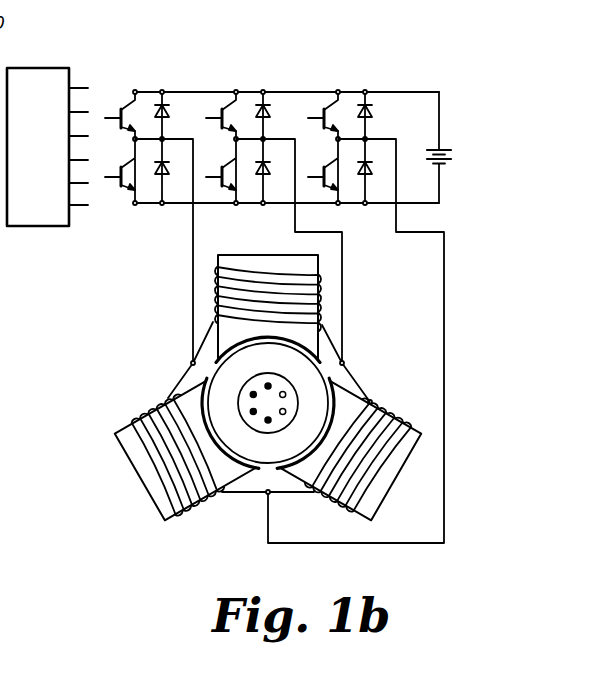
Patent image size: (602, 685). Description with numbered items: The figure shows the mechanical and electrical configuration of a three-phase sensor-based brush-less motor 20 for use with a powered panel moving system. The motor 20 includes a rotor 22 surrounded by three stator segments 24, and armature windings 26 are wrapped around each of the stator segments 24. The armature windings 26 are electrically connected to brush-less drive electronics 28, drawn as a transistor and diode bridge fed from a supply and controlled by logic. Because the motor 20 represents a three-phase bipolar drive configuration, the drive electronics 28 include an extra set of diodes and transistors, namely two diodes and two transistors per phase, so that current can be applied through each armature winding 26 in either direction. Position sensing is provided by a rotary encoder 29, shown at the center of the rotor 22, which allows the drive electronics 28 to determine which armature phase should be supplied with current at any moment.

The three-phase sensor-based brush-less motor 20 is at (409, 60).
The brush-less drive electronics 28 is at (210, 83).
The rotor 22 is at (310, 392).
The stator segments 24 is at (265, 263).
The armature windings 26 is at (315, 352).
The rotary encoder 29 is at (242, 408).